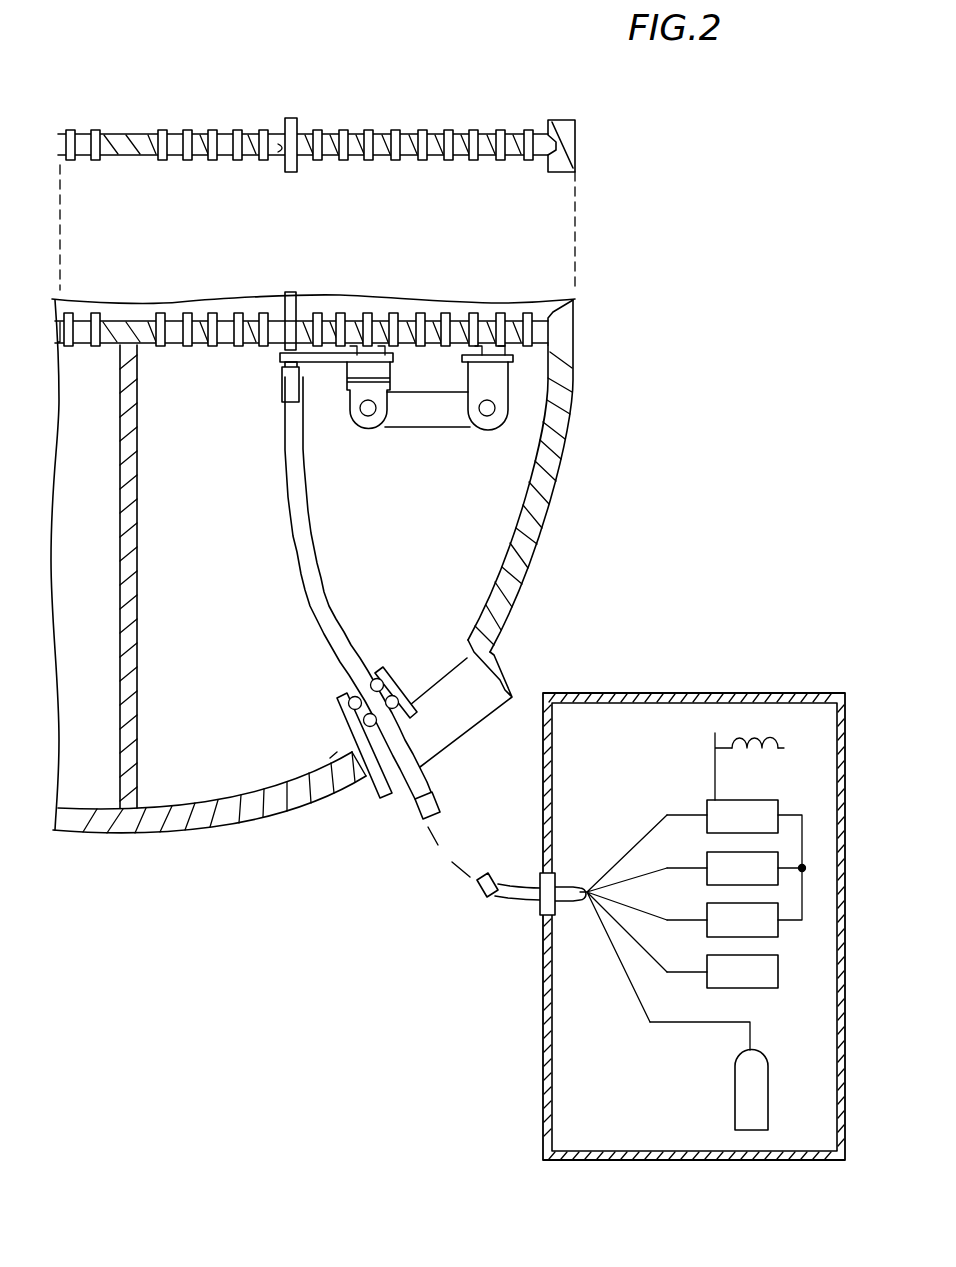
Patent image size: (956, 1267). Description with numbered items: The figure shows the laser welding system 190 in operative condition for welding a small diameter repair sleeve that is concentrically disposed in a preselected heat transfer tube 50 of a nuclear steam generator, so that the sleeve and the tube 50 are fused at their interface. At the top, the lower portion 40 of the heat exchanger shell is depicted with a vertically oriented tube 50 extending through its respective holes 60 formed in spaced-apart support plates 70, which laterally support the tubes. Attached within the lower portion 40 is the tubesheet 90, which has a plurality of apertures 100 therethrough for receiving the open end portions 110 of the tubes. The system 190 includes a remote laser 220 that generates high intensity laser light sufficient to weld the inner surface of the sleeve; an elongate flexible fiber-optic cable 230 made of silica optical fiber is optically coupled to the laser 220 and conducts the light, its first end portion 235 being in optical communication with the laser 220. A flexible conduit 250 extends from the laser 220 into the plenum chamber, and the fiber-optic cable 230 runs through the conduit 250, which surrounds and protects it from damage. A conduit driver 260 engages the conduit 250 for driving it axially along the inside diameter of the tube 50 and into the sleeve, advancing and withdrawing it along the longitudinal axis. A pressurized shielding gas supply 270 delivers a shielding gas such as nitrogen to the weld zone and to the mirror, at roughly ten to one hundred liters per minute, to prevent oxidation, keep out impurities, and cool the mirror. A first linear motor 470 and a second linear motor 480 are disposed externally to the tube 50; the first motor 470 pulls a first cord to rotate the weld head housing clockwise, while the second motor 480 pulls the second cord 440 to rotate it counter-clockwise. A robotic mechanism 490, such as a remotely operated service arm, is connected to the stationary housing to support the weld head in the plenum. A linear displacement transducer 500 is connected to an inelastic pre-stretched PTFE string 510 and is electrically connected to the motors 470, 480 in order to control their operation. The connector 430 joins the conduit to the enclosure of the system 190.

The lower portion 40 is at (578, 148).
The heat transfer tube 50 is at (298, 130).
The hole 60 is at (284, 160).
The support plate 70 is at (433, 132).
The tubesheet 90 is at (548, 330).
The aperture 100 is at (236, 345).
The open end portion 110 is at (186, 160).
The system 190 is at (602, 626).
The laser 220 is at (763, 982).
The fiber-optic cable 230 is at (643, 950).
The first end portion 235 is at (703, 973).
The flexible conduit 250 is at (448, 799).
The conduit driver 260 is at (340, 700).
The pressurized shielding gas supply 270 is at (738, 1088).
The connector 430 is at (637, 912).
The second cord 440 is at (645, 872).
The first linear motor 470 is at (770, 928).
The second linear motor 480 is at (715, 877).
The robotic mechanism 490 is at (474, 449).
The linear displacement transducer 500 is at (762, 802).
The inelastic string 510 is at (682, 815).